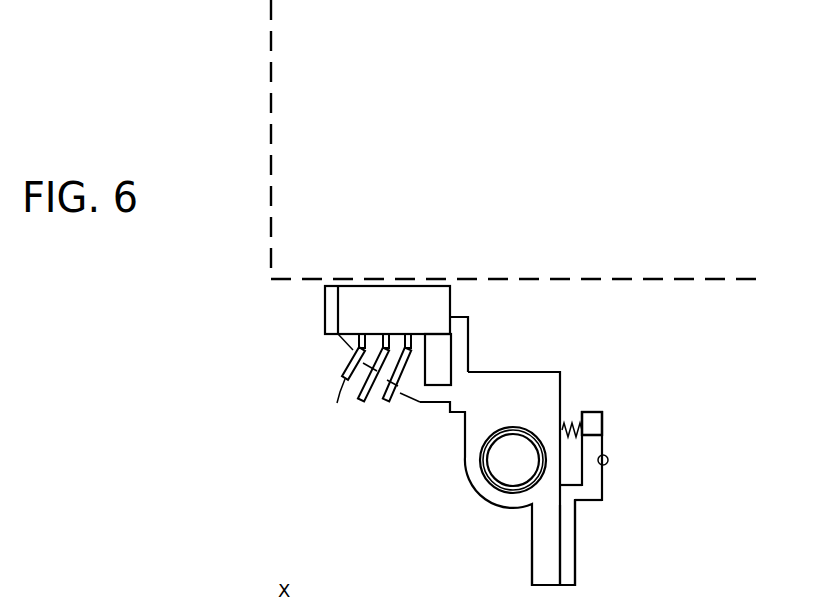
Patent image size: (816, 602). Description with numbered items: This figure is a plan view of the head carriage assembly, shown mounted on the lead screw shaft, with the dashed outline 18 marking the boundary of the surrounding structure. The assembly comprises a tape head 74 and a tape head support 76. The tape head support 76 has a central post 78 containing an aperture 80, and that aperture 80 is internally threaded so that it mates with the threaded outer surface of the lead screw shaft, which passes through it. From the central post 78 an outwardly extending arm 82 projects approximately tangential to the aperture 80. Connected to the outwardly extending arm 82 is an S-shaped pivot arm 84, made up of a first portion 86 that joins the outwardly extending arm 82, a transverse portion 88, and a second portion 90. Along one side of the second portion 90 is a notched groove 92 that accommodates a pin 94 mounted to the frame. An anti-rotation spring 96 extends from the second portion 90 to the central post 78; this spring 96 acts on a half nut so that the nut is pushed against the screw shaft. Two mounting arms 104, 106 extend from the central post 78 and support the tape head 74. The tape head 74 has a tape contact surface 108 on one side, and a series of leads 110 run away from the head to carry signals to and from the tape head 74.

The housing panel 18 is at (267, 108).
The tape head 74 is at (342, 303).
The tape head support 76 is at (394, 438).
The central post 78 is at (472, 427).
The aperture 80 is at (537, 480).
The outwardly extending arm 82 is at (540, 573).
The S-shaped pivot arm 84 is at (605, 410).
The first portion 86 is at (577, 559).
The transverse portion 88 is at (572, 489).
The second portion 90 is at (583, 412).
The notched groove 92 is at (595, 438).
The pin 94 is at (608, 460).
The anti-rotation spring 96 is at (582, 432).
The mounting arm 104 is at (350, 347).
The mounting arm 106 is at (452, 358).
The tape contact surface 108 is at (393, 284).
The leads 110 is at (361, 398).